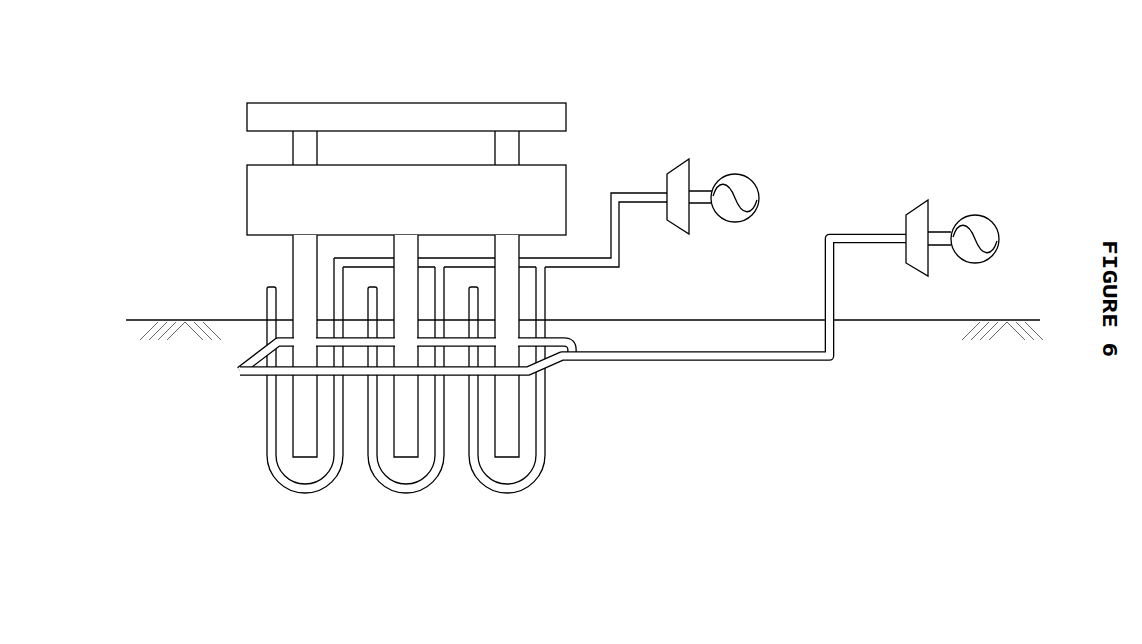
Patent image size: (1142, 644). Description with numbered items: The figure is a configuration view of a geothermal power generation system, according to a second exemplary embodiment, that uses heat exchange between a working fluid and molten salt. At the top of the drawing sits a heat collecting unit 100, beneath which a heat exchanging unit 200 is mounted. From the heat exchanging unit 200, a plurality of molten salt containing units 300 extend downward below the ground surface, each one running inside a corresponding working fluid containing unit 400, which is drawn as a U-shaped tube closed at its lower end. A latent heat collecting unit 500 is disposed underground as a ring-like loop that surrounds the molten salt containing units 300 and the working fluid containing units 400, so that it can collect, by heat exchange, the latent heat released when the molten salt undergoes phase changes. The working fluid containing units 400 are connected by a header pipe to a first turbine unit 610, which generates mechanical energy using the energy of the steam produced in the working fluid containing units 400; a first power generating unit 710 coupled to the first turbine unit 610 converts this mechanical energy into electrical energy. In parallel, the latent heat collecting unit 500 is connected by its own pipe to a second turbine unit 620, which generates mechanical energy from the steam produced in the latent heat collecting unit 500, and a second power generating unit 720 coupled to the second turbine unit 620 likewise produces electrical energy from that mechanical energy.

The heat collecting unit 100 is at (412, 107).
The heat exchanging unit 200 is at (247, 196).
The molten salt containing unit 300 is at (305, 450).
The working fluid containing unit 400 is at (273, 466).
The latent heat collecting unit 500 is at (247, 372).
The first turbine unit 610 is at (677, 173).
The second turbine unit 620 is at (917, 215).
The first power generating unit 710 is at (737, 175).
The second power generating unit 720 is at (977, 216).